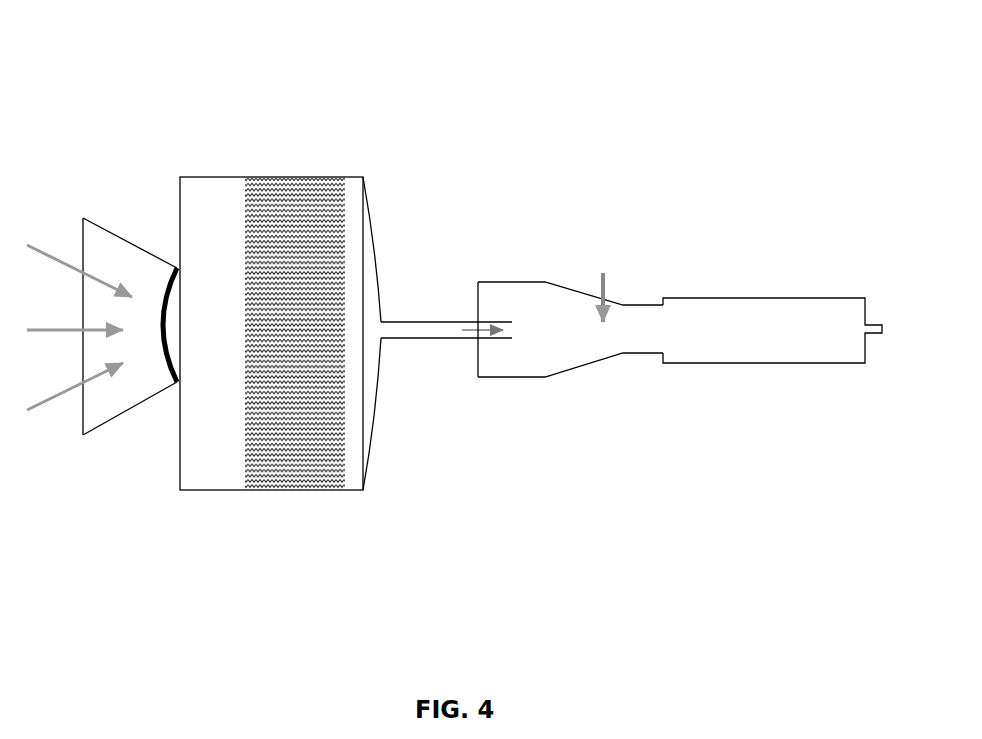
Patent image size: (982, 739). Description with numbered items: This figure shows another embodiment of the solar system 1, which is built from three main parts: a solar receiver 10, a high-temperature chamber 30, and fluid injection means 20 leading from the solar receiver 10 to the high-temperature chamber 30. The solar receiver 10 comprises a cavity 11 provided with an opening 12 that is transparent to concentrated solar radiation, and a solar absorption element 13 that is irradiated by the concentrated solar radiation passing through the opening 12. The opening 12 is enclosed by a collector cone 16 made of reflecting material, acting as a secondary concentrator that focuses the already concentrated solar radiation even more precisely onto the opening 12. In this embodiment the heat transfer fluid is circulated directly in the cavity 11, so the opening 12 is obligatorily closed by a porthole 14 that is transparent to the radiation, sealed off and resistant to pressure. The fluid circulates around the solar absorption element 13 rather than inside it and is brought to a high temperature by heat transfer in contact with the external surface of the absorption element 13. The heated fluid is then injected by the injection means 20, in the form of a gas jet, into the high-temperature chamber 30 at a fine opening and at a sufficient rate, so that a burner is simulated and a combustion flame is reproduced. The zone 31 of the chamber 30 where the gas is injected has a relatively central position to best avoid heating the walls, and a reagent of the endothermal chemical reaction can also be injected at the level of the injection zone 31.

The solar system 1 is at (371, 122).
The solar receiver 10 is at (223, 513).
The cavity 11 is at (212, 210).
The opening 12 is at (177, 320).
The solar absorption element 13 is at (312, 453).
The porthole 14 is at (169, 378).
The collector cone 16 is at (106, 427).
The fluid injection means 20 is at (435, 338).
The high-temperature chamber 30 is at (697, 280).
The injection zone 31 is at (552, 377).